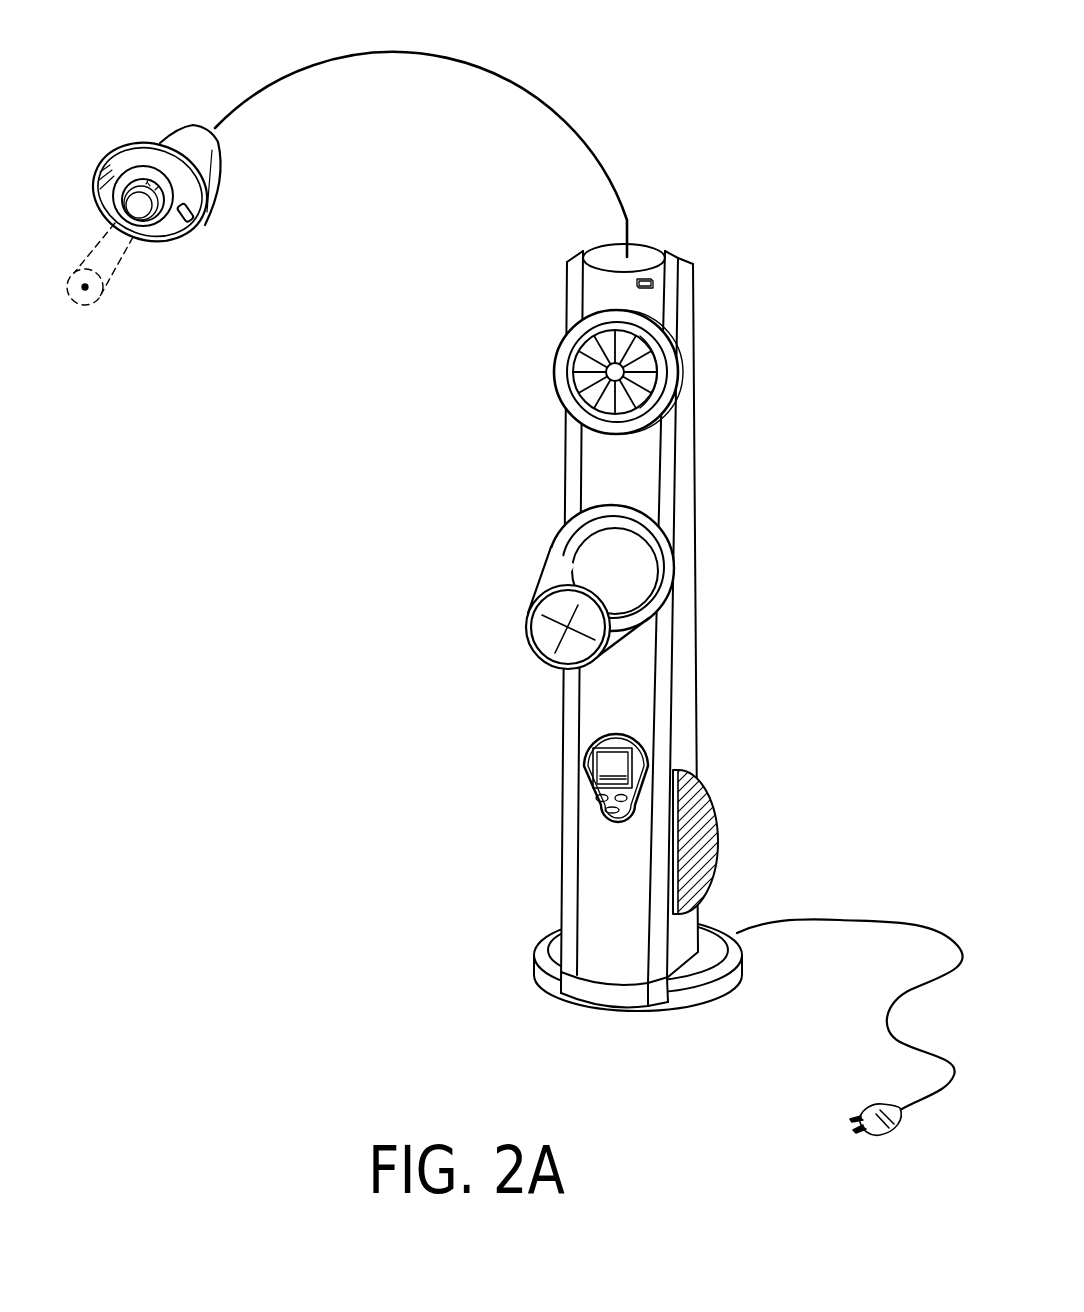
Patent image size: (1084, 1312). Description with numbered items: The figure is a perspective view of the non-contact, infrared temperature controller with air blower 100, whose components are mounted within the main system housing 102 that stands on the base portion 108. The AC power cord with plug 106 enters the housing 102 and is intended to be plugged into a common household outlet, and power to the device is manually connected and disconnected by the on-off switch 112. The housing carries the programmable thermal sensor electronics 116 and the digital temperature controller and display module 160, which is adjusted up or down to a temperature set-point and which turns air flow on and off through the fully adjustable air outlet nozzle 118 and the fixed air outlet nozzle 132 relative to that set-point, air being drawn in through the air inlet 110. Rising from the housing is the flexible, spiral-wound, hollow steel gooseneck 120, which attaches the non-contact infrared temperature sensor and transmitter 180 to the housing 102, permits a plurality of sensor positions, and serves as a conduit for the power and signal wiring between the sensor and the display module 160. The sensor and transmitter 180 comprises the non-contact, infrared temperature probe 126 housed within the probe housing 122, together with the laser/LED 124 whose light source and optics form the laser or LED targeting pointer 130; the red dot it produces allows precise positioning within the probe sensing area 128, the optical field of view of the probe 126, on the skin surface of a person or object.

The non-contact, infrared temperature controller with air blower 100 is at (390, 930).
The main system housing 102 is at (697, 530).
The AC power cord with plug 106 is at (852, 917).
The base portion 108 is at (717, 995).
The air inlet 110 is at (707, 792).
The on-off switch 112 is at (650, 308).
The programmable thermal sensor (thermostat) electronics 116 is at (573, 463).
The fully adjustable air outlet nozzle 118 is at (526, 627).
The flexible gooseneck 120 is at (497, 70).
The non-contact IR temperature probe housing 122 is at (148, 130).
The laser/LED 124 is at (197, 236).
The non-contact, infrared temperature probe 126 is at (103, 197).
The probe sensing area 128 is at (87, 305).
The laser or LED targeting pointer 130 is at (85, 287).
The fixed air outlet nozzle 132 is at (621, 432).
The non-contact, infrared temperature controller and display module 160 is at (593, 797).
The non-contact infrared temperature sensor and transmitter 180 is at (201, 272).